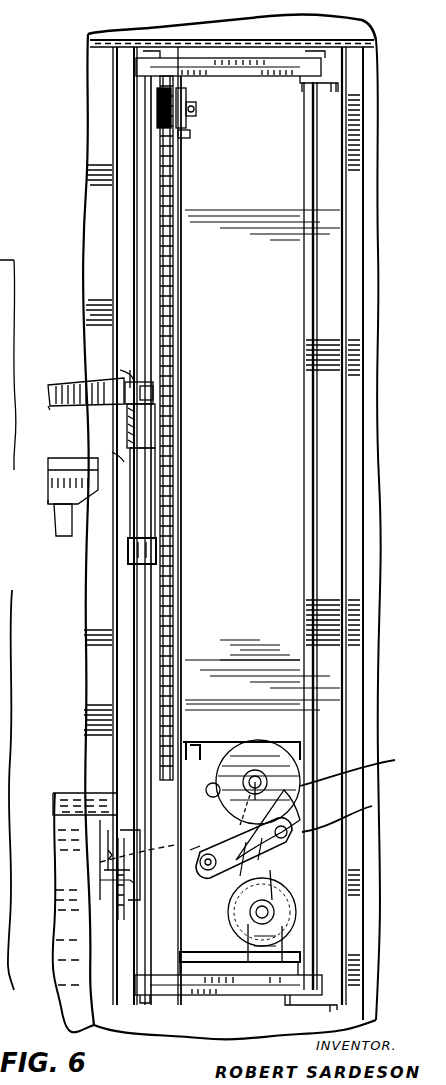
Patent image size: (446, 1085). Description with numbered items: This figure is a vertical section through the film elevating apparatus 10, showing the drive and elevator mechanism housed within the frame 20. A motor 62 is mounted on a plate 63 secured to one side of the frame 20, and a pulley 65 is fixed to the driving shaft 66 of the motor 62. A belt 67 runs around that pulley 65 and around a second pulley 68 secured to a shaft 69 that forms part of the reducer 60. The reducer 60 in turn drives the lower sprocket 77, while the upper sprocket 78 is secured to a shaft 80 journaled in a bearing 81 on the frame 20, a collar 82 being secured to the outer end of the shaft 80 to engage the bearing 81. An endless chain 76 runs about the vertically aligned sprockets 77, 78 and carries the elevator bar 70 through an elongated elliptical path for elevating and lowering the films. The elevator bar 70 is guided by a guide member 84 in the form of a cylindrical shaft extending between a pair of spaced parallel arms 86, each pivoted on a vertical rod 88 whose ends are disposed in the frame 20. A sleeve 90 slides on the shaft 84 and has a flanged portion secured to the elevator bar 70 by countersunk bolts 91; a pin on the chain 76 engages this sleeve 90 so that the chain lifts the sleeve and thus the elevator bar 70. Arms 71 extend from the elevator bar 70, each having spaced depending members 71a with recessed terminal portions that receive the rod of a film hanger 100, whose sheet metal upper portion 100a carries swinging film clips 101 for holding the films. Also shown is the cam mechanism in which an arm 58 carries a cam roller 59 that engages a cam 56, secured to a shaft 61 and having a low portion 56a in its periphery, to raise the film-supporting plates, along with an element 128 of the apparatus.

The ink bottle filling machine 10 is at (135, 347).
The frame 20 is at (364, 116).
The cam 56 is at (270, 742).
The low portion 56a is at (361, 765).
The arm 58 is at (243, 912).
The cam roller 59 is at (348, 810).
The reducer 60 is at (270, 724).
The shaft 61 is at (236, 810).
The motor 62 is at (246, 946).
The plate 63 is at (222, 960).
The pulley 65 is at (244, 848).
The driving shaft 66 is at (286, 881).
The belt 67 is at (268, 878).
The pulley 68 is at (193, 843).
The shaft 69 is at (228, 748).
The elevator bar 70 is at (178, 402).
The arm 71 is at (74, 382).
The depending member 71a is at (125, 408).
The endless chain 76 is at (170, 420).
The sprocket 77 is at (205, 748).
The sprocket 78 is at (154, 97).
The shaft 80 is at (197, 110).
The bearing 81 is at (182, 112).
The collar 82 is at (190, 136).
The guide member 84 is at (140, 664).
The arm 86 is at (255, 60).
The vertical rod 88 is at (300, 400).
The sleeve 90 is at (170, 432).
The bolt 91 is at (132, 374).
The film hanger 100 is at (46, 474).
The upper portion 100a is at (54, 494).
The film clip 101 is at (66, 538).
The tray 128 is at (3, 171).